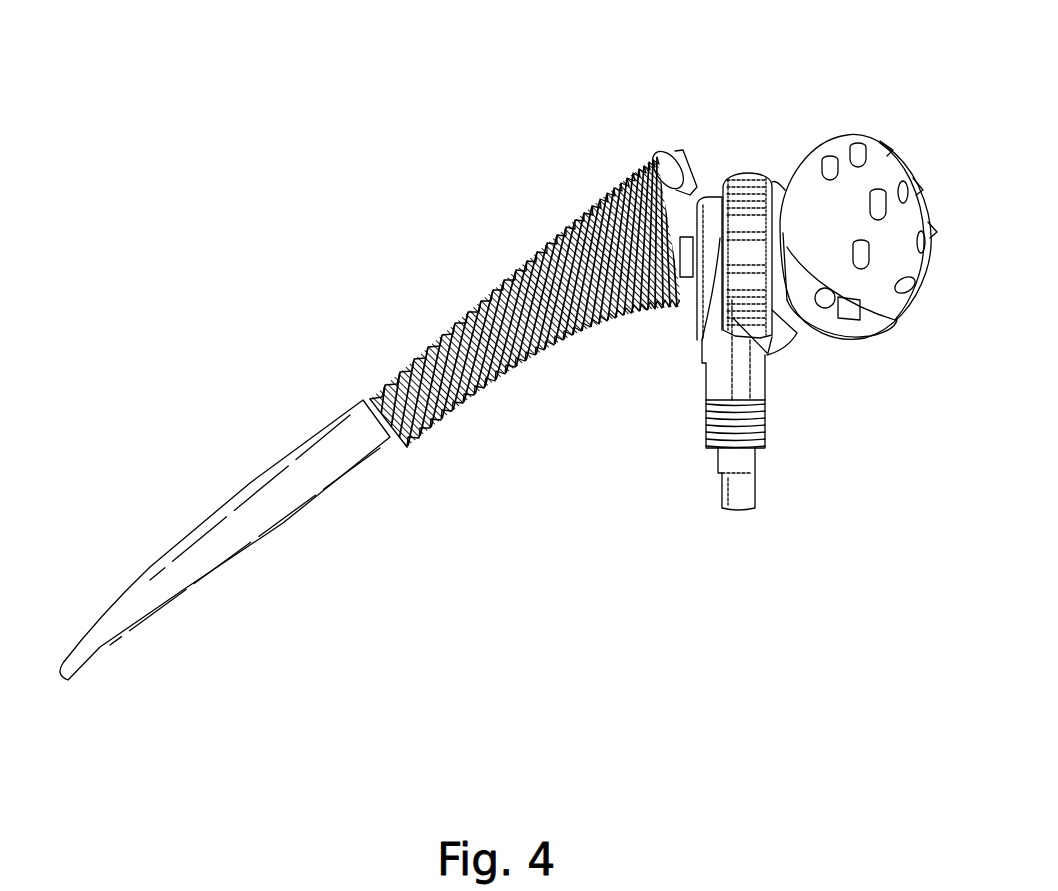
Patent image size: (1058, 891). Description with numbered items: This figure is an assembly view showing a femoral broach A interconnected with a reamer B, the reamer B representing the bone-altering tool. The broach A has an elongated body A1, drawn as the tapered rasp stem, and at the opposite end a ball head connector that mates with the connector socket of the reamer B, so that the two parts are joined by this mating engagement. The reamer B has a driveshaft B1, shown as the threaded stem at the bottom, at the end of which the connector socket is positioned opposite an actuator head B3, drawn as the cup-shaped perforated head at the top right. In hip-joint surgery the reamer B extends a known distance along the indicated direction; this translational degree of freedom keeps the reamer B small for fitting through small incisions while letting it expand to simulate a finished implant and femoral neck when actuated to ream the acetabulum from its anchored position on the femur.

The femoral broach A is at (254, 374).
The body A1 is at (285, 540).
The reamer B is at (742, 136).
The driveshaft B1 is at (728, 463).
The actuator head B3 is at (858, 133).